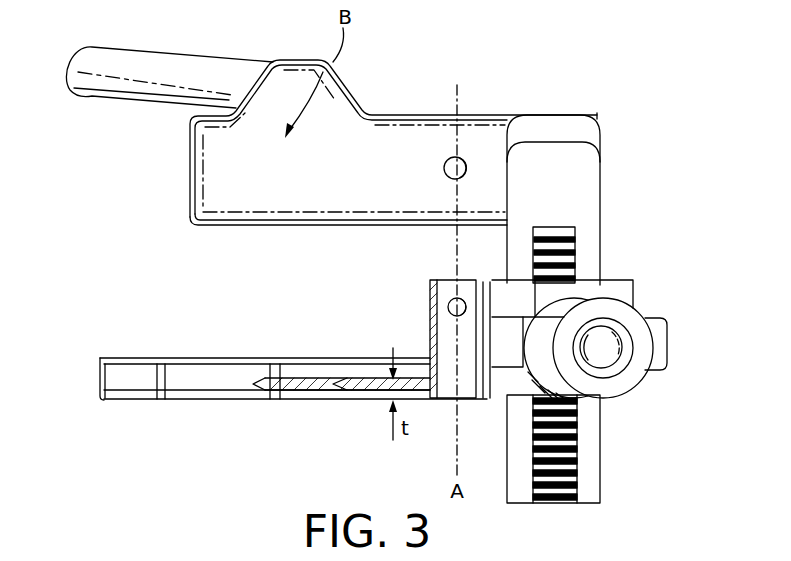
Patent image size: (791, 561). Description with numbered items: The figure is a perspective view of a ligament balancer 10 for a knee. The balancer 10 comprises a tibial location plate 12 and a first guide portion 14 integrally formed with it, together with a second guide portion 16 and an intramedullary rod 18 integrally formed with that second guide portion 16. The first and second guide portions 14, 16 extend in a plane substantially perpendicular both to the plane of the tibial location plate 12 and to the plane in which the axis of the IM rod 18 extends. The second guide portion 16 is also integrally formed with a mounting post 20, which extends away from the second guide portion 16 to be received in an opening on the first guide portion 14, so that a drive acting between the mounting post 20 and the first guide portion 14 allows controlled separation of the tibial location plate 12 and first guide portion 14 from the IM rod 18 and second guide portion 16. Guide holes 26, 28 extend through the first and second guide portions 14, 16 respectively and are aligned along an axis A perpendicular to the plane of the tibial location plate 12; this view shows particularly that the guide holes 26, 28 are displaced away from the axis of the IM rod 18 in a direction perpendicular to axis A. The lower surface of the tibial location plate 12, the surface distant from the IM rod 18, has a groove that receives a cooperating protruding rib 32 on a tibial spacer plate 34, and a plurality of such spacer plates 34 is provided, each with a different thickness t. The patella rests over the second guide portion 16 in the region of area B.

The ligament balancer 10 is at (638, 146).
The tibial location plate 12 is at (220, 372).
The first guide portion 14 is at (428, 328).
The second guide portion 16 is at (403, 110).
The intramedullary rod 18 is at (182, 70).
The mounting post 20 is at (602, 458).
The guide hole 26 is at (447, 306).
The guide hole 28 is at (446, 177).
The protruding rib 32 is at (310, 393).
The tibial spacer plate 34 is at (223, 400).